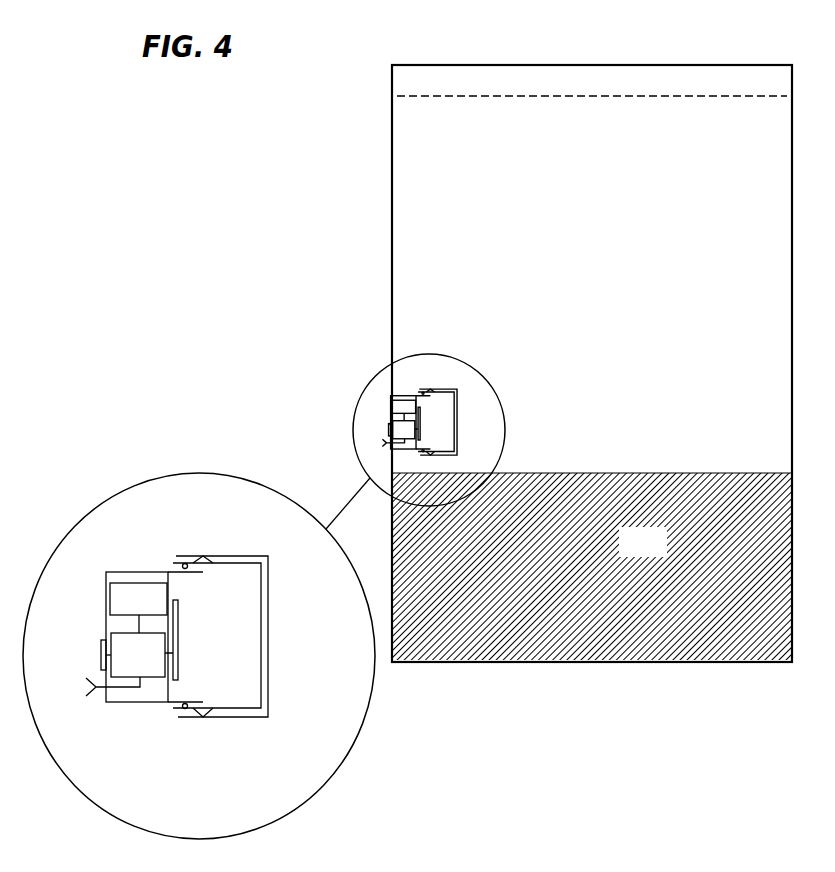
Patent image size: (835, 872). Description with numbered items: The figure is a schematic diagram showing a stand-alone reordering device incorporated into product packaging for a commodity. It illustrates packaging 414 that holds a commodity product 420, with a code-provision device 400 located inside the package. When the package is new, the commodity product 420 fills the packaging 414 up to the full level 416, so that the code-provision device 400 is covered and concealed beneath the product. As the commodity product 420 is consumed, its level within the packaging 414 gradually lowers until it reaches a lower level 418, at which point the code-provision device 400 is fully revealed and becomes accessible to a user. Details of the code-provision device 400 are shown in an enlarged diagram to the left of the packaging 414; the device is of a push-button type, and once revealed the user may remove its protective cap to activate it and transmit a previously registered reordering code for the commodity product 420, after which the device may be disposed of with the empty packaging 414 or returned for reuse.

The code-provision device 400 is at (420, 369).
The packaging 414 is at (602, 65).
The full level 416 is at (418, 95).
The lower level 418 is at (658, 472).
The commodity product 420 is at (660, 552).